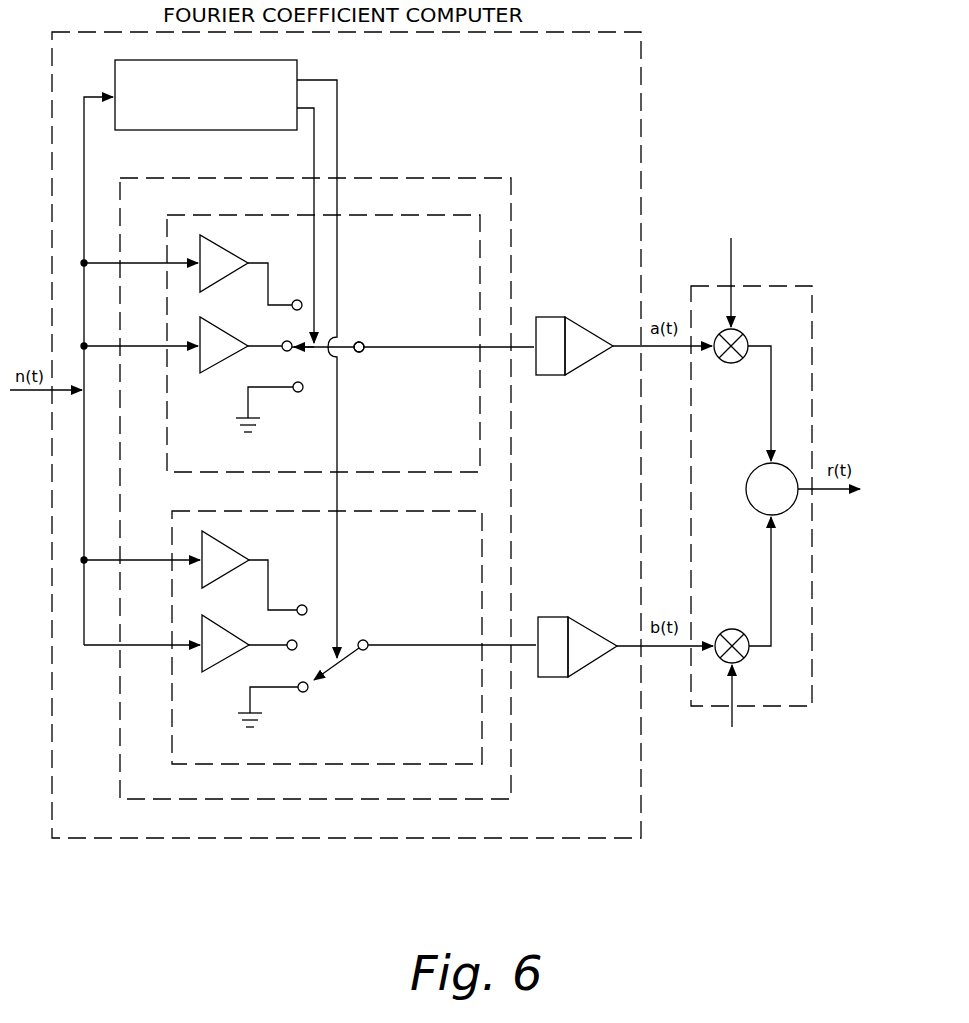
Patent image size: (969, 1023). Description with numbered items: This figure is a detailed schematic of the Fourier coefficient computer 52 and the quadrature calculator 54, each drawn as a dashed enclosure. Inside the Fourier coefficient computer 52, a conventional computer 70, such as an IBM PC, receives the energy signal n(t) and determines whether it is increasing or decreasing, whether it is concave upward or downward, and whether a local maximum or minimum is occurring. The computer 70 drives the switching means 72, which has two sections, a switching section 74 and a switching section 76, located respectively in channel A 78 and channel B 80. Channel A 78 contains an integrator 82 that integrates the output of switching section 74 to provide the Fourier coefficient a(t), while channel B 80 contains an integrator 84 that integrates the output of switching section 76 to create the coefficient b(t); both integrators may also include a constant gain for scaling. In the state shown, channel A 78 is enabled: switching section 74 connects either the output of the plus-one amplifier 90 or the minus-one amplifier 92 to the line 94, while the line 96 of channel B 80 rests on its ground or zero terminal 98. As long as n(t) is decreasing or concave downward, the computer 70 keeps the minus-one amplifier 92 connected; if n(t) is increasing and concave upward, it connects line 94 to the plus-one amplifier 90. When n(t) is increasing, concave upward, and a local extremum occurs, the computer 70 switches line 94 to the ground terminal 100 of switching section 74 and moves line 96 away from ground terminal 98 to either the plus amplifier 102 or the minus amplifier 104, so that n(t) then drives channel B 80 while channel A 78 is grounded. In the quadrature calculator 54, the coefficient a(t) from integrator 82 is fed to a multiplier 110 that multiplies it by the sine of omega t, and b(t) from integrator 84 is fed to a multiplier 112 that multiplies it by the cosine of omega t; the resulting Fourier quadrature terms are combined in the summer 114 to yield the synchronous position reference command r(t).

The Fourier coefficient computer 52 is at (639, 96).
The quadrature calculator 54 is at (787, 710).
The conventional computer 70 is at (299, 66).
The switching means 72 is at (181, 175).
The switching section 74 is at (164, 360).
The switching section 76 is at (168, 521).
The channel A 78 is at (347, 345).
The channel B 80 is at (331, 667).
The integrator 82 is at (574, 315).
The integrator 84 is at (579, 615).
The +1 amplifier 90 is at (219, 254).
The −1 amplifier 92 is at (216, 330).
The line 94 is at (366, 354).
The line 96 is at (367, 630).
The ground terminal 98 is at (279, 691).
The ground terminal 100 is at (276, 391).
The plus amplifier 102 is at (227, 546).
The minus amplifier 104 is at (225, 629).
The multiplier 110 is at (744, 334).
The multiplier 112 is at (731, 628).
The summer 114 is at (750, 483).